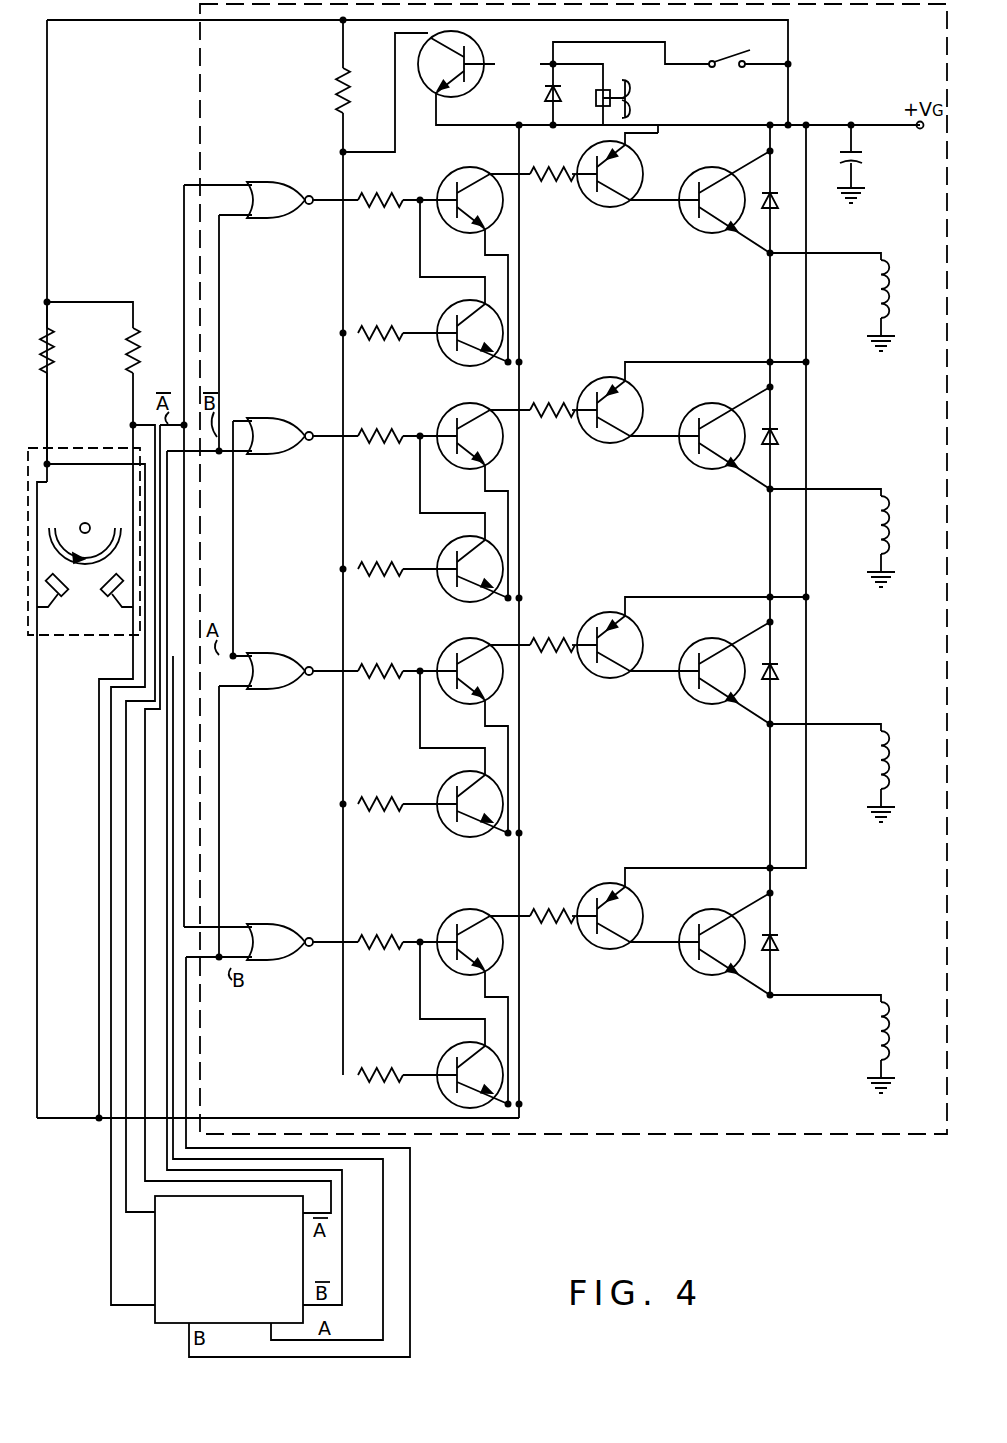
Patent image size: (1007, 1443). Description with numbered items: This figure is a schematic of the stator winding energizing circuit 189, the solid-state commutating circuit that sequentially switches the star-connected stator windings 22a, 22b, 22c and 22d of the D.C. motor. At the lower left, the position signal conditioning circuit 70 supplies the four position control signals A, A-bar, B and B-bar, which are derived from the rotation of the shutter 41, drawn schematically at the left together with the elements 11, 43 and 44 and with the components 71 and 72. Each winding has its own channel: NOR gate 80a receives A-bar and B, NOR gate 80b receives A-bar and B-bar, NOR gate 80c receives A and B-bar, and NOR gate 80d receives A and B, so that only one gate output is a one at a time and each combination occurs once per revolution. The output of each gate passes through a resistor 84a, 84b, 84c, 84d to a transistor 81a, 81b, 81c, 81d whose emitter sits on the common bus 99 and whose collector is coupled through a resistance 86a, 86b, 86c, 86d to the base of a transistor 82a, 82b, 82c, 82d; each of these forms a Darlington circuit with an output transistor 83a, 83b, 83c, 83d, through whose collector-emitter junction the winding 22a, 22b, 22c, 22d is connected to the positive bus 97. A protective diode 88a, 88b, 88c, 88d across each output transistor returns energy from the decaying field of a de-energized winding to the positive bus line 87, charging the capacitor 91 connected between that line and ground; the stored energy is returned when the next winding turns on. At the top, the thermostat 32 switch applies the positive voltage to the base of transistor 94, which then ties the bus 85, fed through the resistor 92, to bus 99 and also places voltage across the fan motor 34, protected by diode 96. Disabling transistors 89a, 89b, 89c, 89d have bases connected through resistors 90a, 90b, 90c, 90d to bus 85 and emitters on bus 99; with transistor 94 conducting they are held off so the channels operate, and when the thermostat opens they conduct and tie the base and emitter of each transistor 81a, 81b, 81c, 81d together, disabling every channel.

The stator winding energizing circuit 189 is at (766, 1140).
The resistor 92 is at (340, 85).
The transistor 94 is at (481, 50).
The protective diode 96 is at (545, 96).
The fan motor 34 is at (613, 90).
The thermostat 32 is at (735, 70).
The positive bus line 87 is at (707, 124).
The capacitor 91 is at (864, 156).
The bus 85 is at (343, 377).
The bus 99 is at (519, 529).
The positive bus 97 is at (806, 552).
The NOR gate 80b is at (286, 219).
The resistor 84b is at (378, 197).
The transistor 81b is at (457, 177).
The resistance 86b is at (556, 172).
The transistor 82b is at (612, 206).
The transistor 83b is at (703, 176).
The protective diode 88b is at (766, 236).
The stator winding 22b is at (876, 298).
The transistor 89b is at (462, 306).
The resistor 90b is at (382, 330).
The NOR gate 80c is at (286, 455).
The resistor 84c is at (378, 433).
The transistor 81c is at (455, 412).
The resistance 86c is at (556, 408).
The transistor 82c is at (610, 442).
The transistor 83c is at (703, 412).
The protective diode 88c is at (780, 436).
The stator winding 22c is at (876, 508).
The transistor 89c is at (462, 542).
The resistor 90c is at (382, 566).
The NOR gate 80d is at (286, 690).
The resistor 84d is at (378, 668).
The transistor 81d is at (455, 647).
The resistance 86d is at (556, 643).
The transistor 82d is at (610, 677).
The transistor 83d is at (703, 647).
The protective diode 88d is at (780, 670).
The stator winding 22d is at (876, 746).
The transistor 89d is at (462, 777).
The resistor 90d is at (382, 801).
The NOR gate 80a is at (288, 925).
The resistor 84a is at (368, 938).
The transistor 81a is at (455, 915).
The resistance 86a is at (556, 913).
The transistor 82a is at (610, 948).
The transistor 83a is at (705, 918).
The protective diode 88a is at (780, 942).
The stator winding 22a is at (876, 1030).
The transistor 89a is at (462, 1046).
The resistor 90a is at (380, 1072).
The resistor 72 is at (50, 356).
The resistor 71 is at (129, 342).
The Hall sensor 44 is at (66, 595).
The Hall sensor 43 is at (104, 595).
The shutter 41 is at (62, 536).
The rotor shaft 11 is at (88, 520).
The position signal conditioning circuit 70 is at (219, 1316).